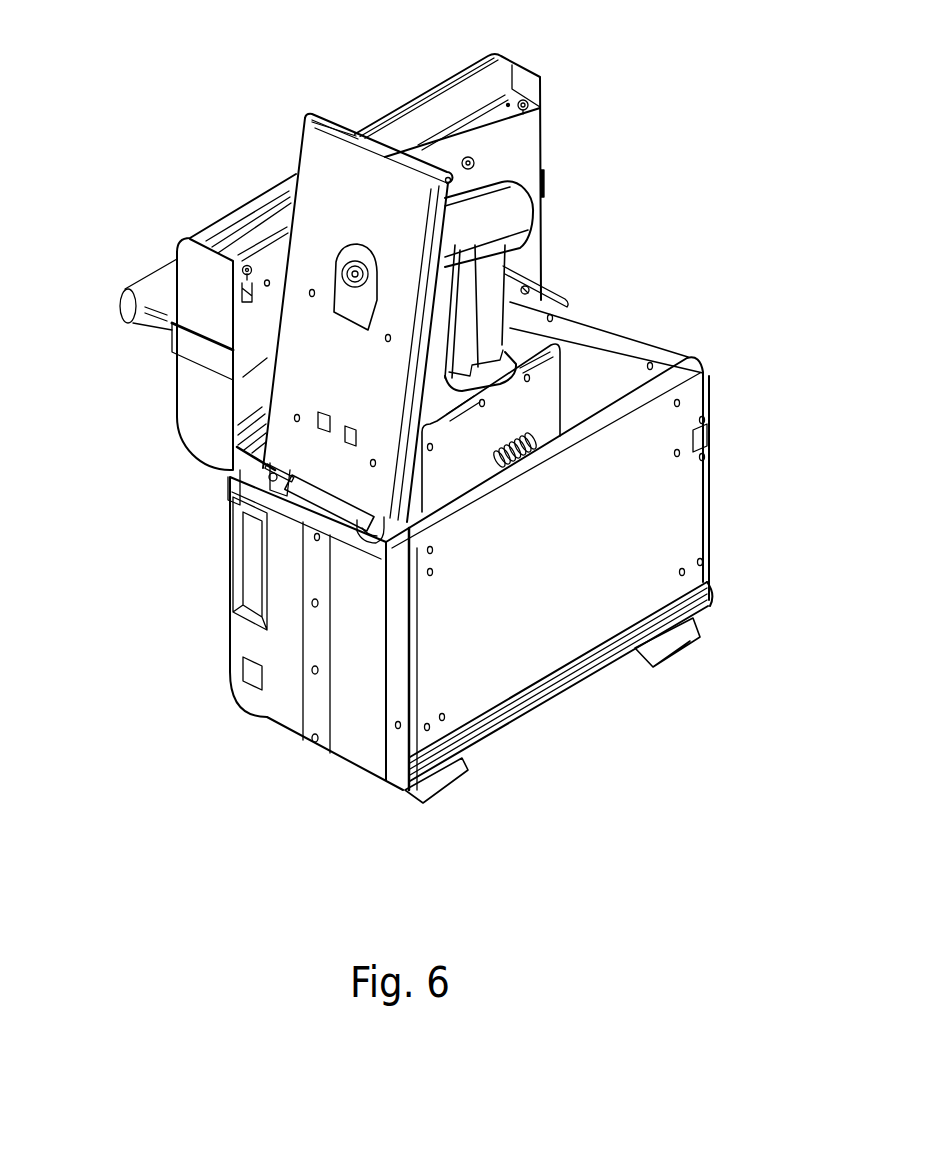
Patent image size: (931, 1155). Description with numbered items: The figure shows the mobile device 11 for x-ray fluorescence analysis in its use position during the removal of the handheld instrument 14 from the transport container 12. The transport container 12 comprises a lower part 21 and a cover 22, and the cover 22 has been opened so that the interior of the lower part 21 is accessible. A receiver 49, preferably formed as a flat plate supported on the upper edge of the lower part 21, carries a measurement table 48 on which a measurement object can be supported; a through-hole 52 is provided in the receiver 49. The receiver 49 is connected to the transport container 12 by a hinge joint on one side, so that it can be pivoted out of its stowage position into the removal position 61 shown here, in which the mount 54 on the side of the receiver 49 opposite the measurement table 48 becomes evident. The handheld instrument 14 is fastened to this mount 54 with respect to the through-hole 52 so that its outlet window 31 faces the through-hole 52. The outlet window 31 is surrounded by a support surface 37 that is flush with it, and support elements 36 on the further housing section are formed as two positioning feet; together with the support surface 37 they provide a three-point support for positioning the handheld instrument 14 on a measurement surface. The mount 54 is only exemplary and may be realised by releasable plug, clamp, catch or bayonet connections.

The mobile device 11 is at (126, 403).
The transport container 12 is at (748, 446).
The handheld instrument 14 is at (524, 163).
The lower part 21 is at (207, 222).
The cover 22 is at (266, 734).
The outlet window 31 is at (341, 252).
The support element 36 is at (352, 418).
The support surface 37 is at (347, 304).
The measurement table 48 is at (318, 173).
The receiver 49 is at (307, 212).
The through-hole 52 is at (378, 257).
The mount 54 is at (312, 115).
The removal position 61 is at (330, 101).